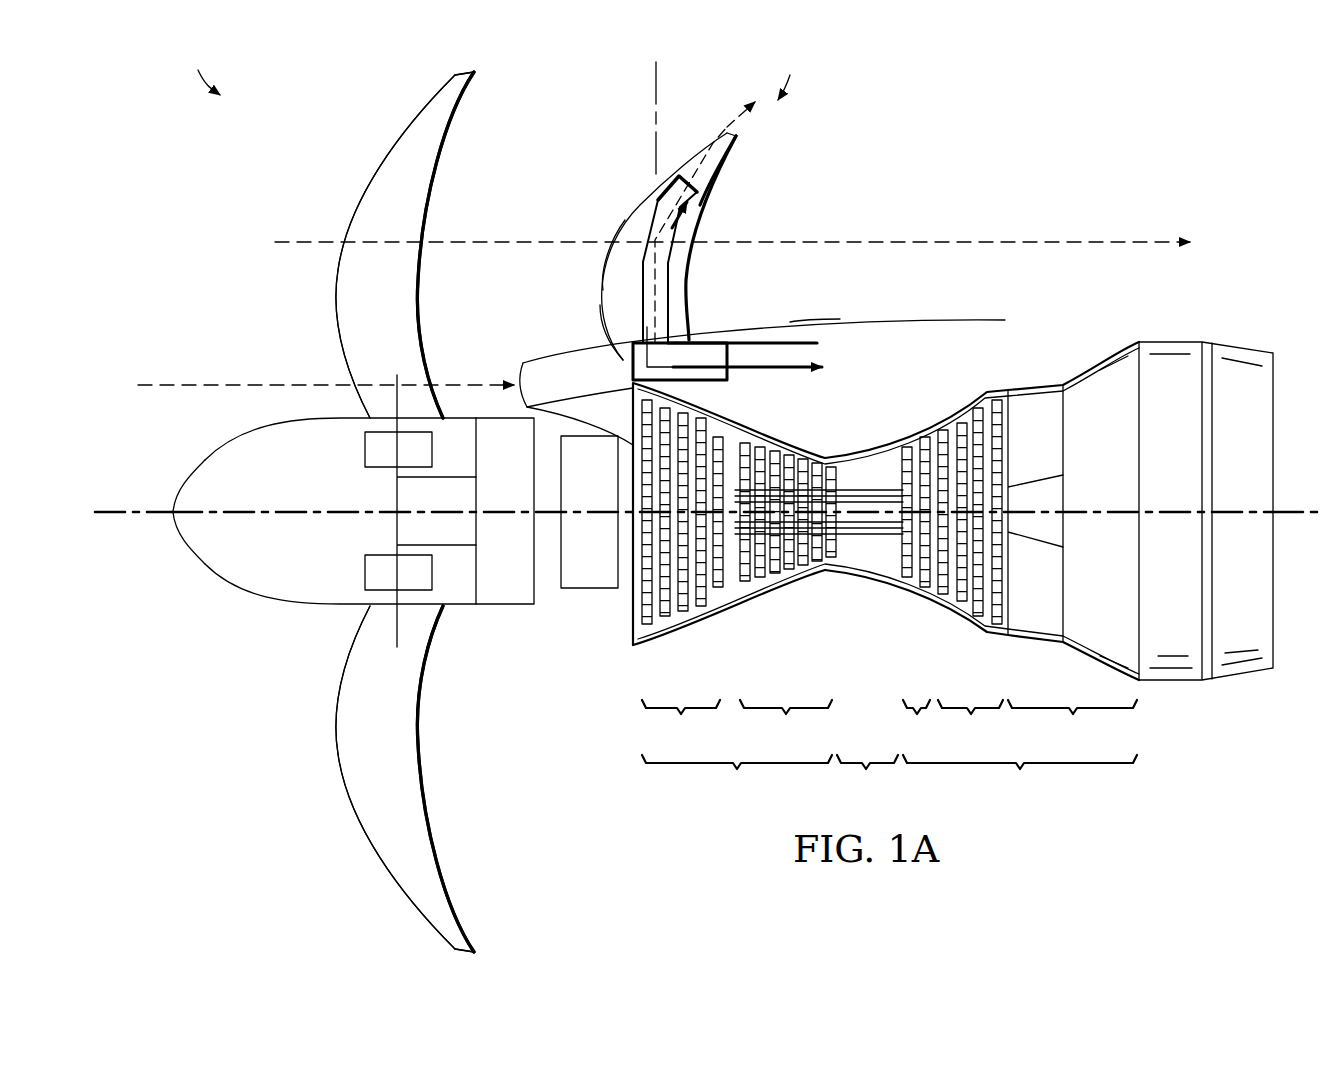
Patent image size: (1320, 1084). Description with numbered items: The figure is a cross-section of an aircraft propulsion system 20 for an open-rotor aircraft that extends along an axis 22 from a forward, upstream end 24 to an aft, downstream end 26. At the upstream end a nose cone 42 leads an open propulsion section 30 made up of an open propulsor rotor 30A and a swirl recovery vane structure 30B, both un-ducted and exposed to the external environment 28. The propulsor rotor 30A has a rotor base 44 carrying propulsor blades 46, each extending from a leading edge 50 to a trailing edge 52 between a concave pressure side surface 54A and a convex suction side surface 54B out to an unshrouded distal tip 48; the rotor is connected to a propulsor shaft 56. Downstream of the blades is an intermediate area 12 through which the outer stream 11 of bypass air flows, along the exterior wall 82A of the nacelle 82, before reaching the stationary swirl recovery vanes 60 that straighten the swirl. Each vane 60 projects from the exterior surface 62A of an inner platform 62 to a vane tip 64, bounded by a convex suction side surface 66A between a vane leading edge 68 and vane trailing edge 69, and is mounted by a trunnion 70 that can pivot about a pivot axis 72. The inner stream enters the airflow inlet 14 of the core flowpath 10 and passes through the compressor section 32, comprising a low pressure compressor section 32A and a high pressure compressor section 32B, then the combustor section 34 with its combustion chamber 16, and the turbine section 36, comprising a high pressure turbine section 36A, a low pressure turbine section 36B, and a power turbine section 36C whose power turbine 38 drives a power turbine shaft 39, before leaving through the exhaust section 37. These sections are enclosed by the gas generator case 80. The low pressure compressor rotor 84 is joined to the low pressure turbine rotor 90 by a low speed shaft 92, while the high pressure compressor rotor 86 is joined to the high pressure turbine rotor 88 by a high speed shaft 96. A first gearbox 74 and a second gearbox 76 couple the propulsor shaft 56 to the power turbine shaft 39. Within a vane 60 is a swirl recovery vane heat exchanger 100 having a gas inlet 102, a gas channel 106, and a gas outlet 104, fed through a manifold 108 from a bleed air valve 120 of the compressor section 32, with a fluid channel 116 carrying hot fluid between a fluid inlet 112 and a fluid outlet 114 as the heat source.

The core flowpath 10 is at (232, 385).
The outer stream 11 is at (931, 238).
The intermediate area 12 is at (425, 497).
The airflow inlet 14 is at (517, 378).
The combustion chamber 16 is at (855, 562).
The aircraft propulsion system 20 is at (194, 67).
The axis 22 is at (323, 505).
The forward, upstream end 24 is at (115, 520).
The aft, downstream end 26 is at (1284, 515).
The external environment 28 is at (148, 434).
The open propulsion section 30 is at (800, 73).
The open propulsor rotor 30A is at (405, 497).
The swirl recovery vane structure 30B is at (651, 204).
The compressor section 32 is at (737, 781).
The low pressure compressor section 32A is at (681, 725).
The high pressure compressor section 32B is at (786, 725).
The combustor section 34 is at (867, 781).
The turbine section 36 is at (1020, 781).
The high pressure turbine section 36A is at (917, 725).
The low pressure turbine section 36B is at (970, 725).
The power turbine section 36C is at (1072, 725).
The exhaust section 37 is at (1204, 326).
The power turbine 38 is at (1099, 330).
The power turbine shaft 39 is at (1031, 483).
The nose cone 42 is at (175, 505).
The rotor base 44 is at (363, 450).
The propulsor blades 46 is at (333, 290).
The distal tip 48 is at (472, 70).
The leading edge 50 is at (345, 228).
The trailing edge 52 is at (422, 290).
The first blade exterior surface 54A is at (353, 308).
The second blade exterior surface 54B is at (353, 743).
The propulsor shaft 56 is at (413, 545).
The swirl recovery vanes 60 is at (722, 190).
The inner platform 62 is at (627, 360).
The exterior surface 62A is at (722, 328).
The vane tip 64 is at (727, 125).
The first vane exterior surface 66A is at (611, 279).
The vane leading edge 68 is at (604, 254).
The vane trailing edge 69 is at (735, 172).
The trunnion 70 is at (612, 320).
The pivot axis 72 is at (652, 78).
The first gearbox 74 is at (505, 606).
The second gearbox 76 is at (588, 590).
The gas generator case 80 is at (812, 588).
The nacelle 82 is at (979, 313).
The exterior wall 82A is at (936, 318).
The low pressure compressor rotor 84 is at (698, 598).
The high pressure compressor rotor 86 is at (787, 572).
The high pressure turbine rotor 88 is at (919, 425).
The low pressure turbine rotor 90 is at (971, 395).
The low speed shaft 92 is at (880, 530).
The high speed shaft 96 is at (858, 483).
The swirl recovery vane heat exchanger 100 is at (618, 199).
The gas inlet 102 is at (698, 350).
The gas outlet 104 is at (740, 133).
The gas channel 106 is at (665, 212).
The manifold 108 is at (688, 395).
The fluid inlet 112 is at (812, 326).
The fluid outlet 114 is at (824, 372).
The fluid channel 116 is at (690, 172).
The bleed air valve 120 is at (743, 350).